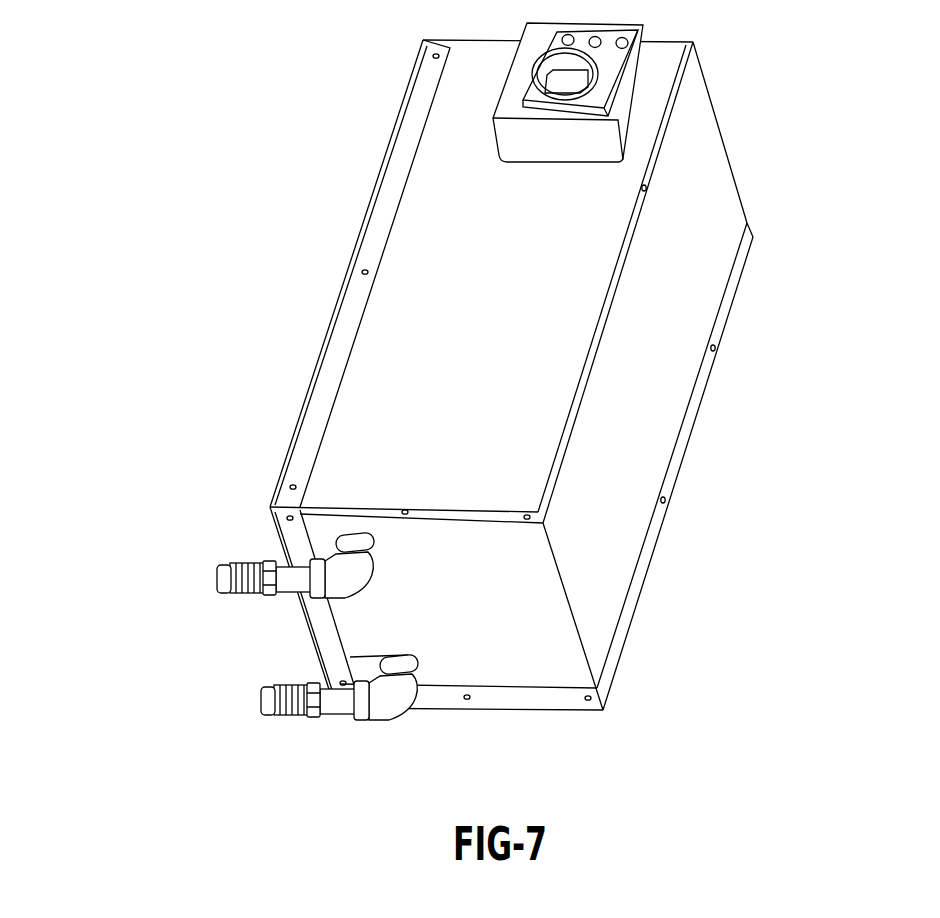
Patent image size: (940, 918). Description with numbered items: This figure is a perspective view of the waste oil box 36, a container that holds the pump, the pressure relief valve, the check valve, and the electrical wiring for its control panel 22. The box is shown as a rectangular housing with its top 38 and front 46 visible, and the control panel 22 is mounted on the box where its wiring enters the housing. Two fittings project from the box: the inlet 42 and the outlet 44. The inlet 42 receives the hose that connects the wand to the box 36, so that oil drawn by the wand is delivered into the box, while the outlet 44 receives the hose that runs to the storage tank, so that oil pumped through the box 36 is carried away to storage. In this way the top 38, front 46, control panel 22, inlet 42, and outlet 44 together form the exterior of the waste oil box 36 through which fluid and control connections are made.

The control panel 22 is at (645, 43).
The waste oil box 36 is at (581, 375).
The top 38 is at (647, 392).
The inlet 42 is at (272, 696).
The outlet 44 is at (220, 571).
The front 46 is at (390, 300).